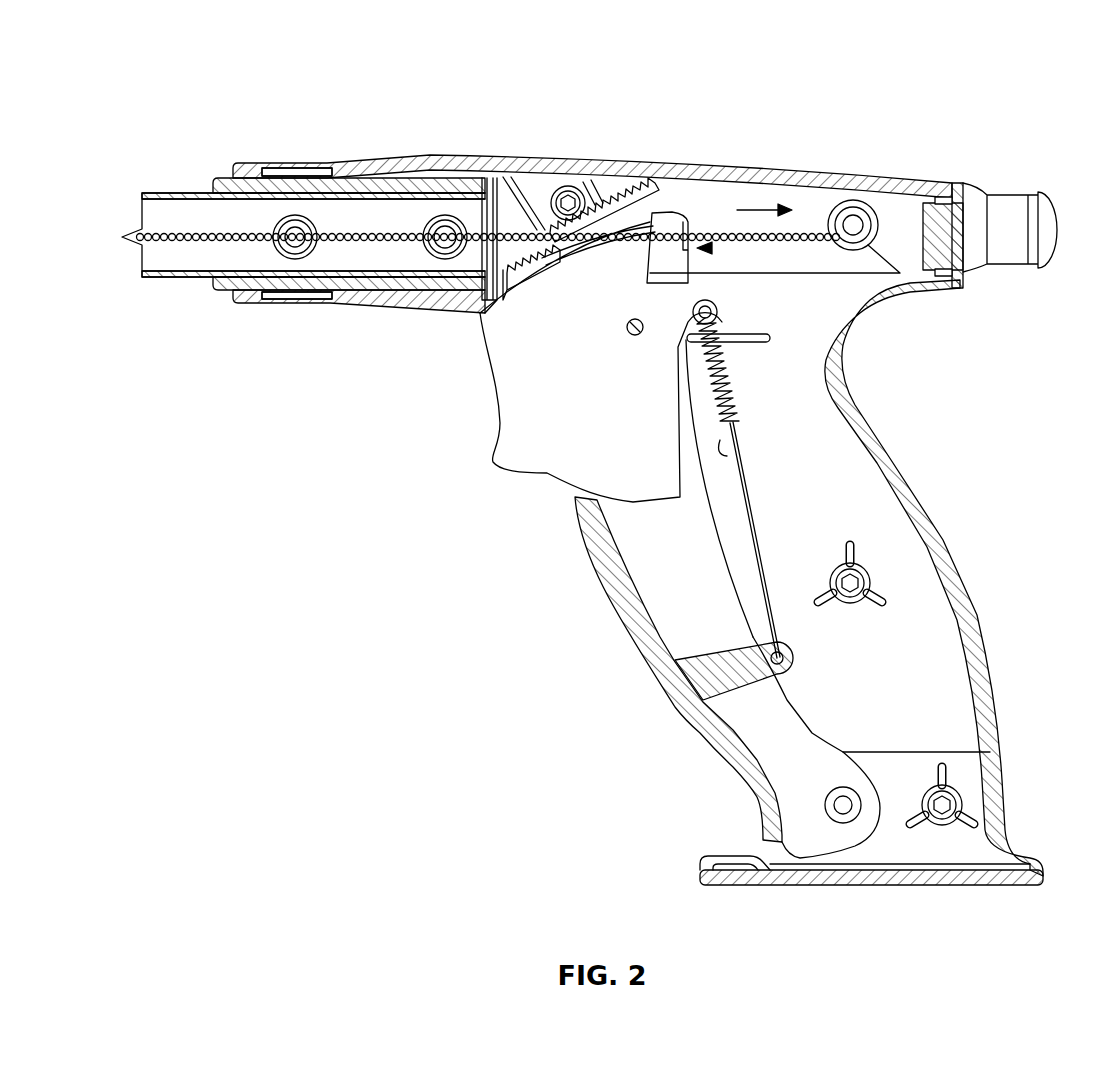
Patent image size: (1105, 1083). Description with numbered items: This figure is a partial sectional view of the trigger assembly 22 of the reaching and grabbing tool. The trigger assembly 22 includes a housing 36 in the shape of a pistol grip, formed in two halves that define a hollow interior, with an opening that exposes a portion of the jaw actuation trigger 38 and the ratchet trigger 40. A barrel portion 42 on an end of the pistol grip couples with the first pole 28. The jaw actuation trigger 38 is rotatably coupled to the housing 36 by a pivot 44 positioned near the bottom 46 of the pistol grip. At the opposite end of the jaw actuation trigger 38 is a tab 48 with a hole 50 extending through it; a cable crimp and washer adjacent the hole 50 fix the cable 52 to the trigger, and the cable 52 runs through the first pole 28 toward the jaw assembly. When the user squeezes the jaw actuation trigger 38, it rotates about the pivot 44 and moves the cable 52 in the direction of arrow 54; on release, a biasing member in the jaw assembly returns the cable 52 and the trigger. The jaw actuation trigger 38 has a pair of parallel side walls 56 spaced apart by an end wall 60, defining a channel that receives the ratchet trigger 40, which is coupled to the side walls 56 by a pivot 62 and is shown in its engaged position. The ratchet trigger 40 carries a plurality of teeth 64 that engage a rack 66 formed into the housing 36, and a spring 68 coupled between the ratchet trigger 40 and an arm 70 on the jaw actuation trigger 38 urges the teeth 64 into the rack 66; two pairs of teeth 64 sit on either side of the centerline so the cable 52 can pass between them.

The trigger assembly 22 is at (1018, 102).
The first pole 28 is at (152, 193).
The housing 36 is at (920, 522).
The jaw actuation trigger 38 is at (715, 762).
The ratchet trigger 40 is at (498, 475).
The barrel portion 42 is at (428, 162).
The pivot 44 is at (843, 815).
The bottom 46 is at (965, 885).
The tab 48 is at (680, 215).
The hole 50 is at (712, 248).
The cable 52 is at (180, 248).
The arrow 54 is at (760, 210).
The side walls 56 is at (665, 584).
The end wall 60 is at (606, 600).
The pivot 62 is at (628, 334).
The teeth 64 is at (518, 272).
The rack 66 is at (626, 185).
The spring 68 is at (765, 545).
The arm 70 is at (700, 685).